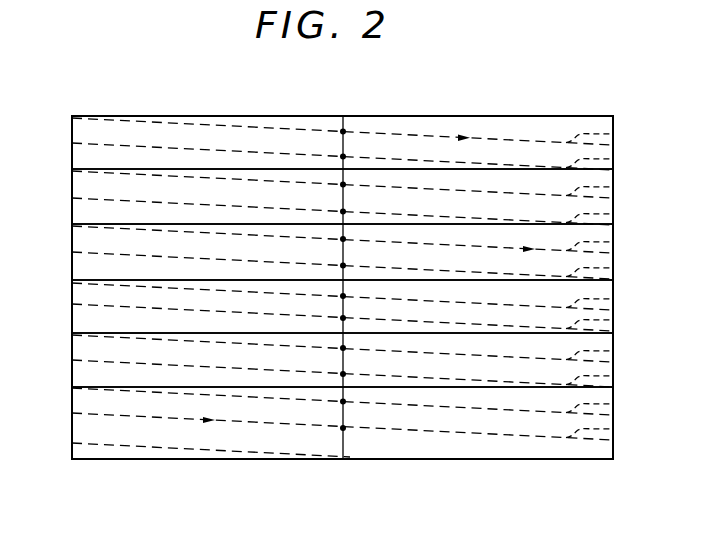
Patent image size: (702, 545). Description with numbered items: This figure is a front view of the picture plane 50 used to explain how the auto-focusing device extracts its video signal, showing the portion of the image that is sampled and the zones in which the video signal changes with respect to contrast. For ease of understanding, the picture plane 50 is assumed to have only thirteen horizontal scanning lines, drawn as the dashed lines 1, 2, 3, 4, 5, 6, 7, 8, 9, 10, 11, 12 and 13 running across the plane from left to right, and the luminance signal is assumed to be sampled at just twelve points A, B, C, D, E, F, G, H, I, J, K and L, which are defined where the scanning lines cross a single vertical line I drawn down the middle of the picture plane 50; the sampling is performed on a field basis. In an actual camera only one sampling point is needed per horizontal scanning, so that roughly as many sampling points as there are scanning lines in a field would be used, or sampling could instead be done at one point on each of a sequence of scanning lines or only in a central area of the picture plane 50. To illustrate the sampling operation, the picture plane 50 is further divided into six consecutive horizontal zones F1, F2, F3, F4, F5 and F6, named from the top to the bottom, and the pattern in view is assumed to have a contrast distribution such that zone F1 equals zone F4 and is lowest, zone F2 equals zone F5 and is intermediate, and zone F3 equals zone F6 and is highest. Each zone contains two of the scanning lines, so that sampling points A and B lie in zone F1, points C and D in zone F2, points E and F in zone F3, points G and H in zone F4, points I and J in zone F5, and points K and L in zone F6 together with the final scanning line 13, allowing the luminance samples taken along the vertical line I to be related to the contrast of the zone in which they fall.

The horizontal scanning line 1 is at (617, 134).
The horizontal scanning line 2 is at (617, 161).
The horizontal scanning line 3 is at (617, 189).
The horizontal scanning line 4 is at (617, 216).
The horizontal scanning line 5 is at (617, 244).
The horizontal scanning line 6 is at (617, 271).
The horizontal scanning line 7 is at (617, 301).
The horizontal scanning line 8 is at (614, 327).
The horizontal scanning line 9 is at (614, 356).
The horizontal scanning line 10 is at (614, 386).
The horizontal scanning line 11 is at (614, 413).
The horizontal scanning line 12 is at (614, 441).
The horizontal scanning line 13 is at (246, 454).
The picture plane 50 is at (513, 460).
The vertical line I is at (345, 129).
The zone F1 is at (72, 134).
The zone F2 is at (72, 189).
The zone F3 is at (72, 245).
The zone F4 is at (72, 298).
The zone F5 is at (72, 350).
The zone F6 is at (72, 405).
The sampling point A is at (343, 132).
The sampling point B is at (343, 156).
The sampling point C is at (343, 184).
The sampling point D is at (343, 212).
The sampling point E is at (343, 239).
The sampling point F is at (343, 266).
The sampling point G is at (343, 296).
The sampling point H is at (343, 318).
The sampling point J is at (343, 374).
The sampling point K is at (343, 402).
The sampling point L is at (343, 428).